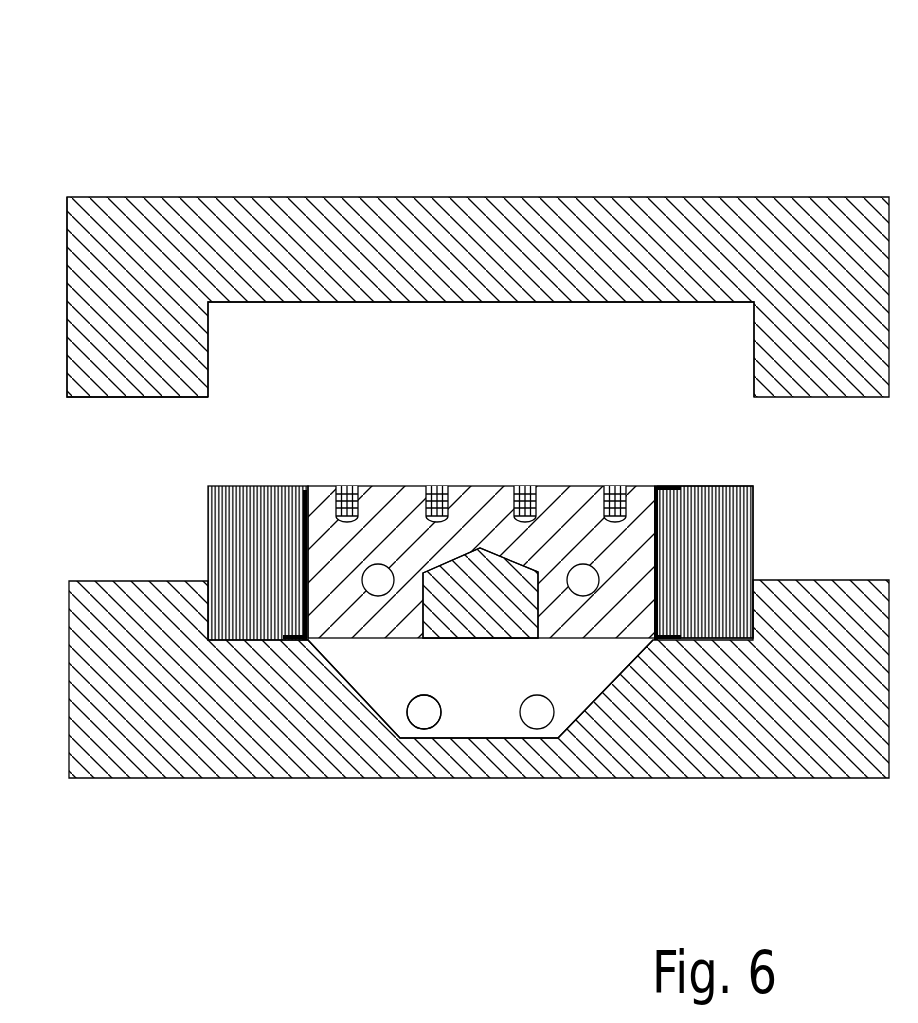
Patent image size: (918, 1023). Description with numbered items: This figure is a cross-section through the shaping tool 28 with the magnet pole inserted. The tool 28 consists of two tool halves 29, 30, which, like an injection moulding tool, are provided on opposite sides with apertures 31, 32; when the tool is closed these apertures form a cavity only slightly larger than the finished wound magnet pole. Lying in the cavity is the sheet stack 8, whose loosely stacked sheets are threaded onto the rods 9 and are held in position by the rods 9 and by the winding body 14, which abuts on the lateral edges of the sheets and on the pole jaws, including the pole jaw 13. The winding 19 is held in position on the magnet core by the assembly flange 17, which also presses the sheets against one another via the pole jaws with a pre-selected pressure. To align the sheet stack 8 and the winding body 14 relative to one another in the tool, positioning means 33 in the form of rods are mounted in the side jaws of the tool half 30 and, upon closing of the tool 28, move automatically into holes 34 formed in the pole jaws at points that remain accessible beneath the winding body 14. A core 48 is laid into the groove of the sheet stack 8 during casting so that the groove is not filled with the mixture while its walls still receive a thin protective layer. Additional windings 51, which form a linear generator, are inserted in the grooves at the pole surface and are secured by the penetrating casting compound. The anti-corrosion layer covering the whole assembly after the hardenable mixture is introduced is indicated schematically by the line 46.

The shaping tool 28 is at (478, 198).
The tool half 29 is at (99, 355).
The aperture 31 is at (265, 357).
The tool half 30 is at (105, 628).
The pole jaw 13 is at (583, 688).
The positioning means 33 is at (537, 712).
The holes 34 is at (412, 724).
The sheet stack 8 is at (567, 538).
The rod 9 is at (378, 580).
The core 48 is at (445, 607).
The additional windings 51 is at (481, 448).
The aperture 32 is at (200, 574).
The winding 19 is at (712, 518).
The line indicating anti-corrosion layer 46 is at (713, 486).
The winding body 14 is at (653, 558).
The assembly flange 17 is at (667, 487).